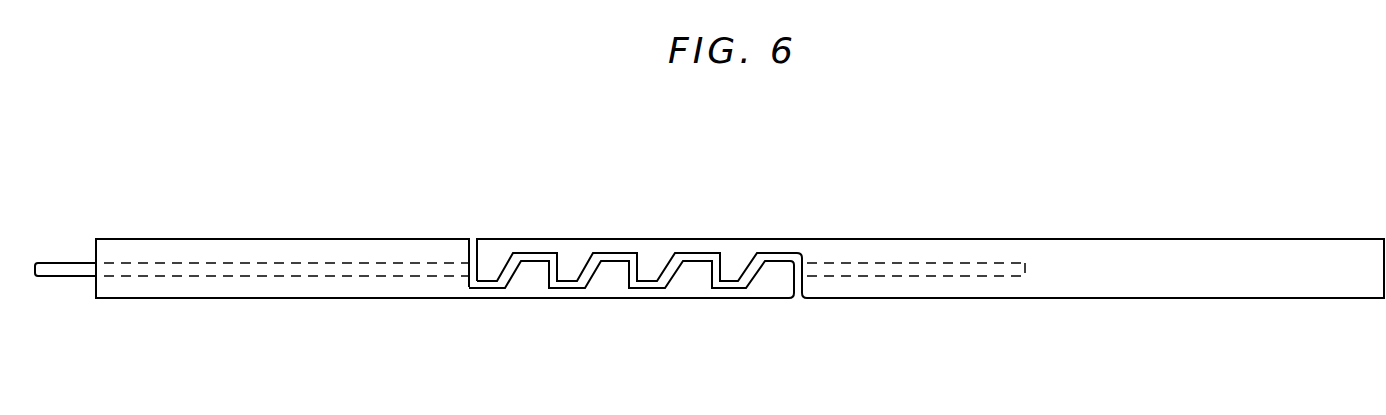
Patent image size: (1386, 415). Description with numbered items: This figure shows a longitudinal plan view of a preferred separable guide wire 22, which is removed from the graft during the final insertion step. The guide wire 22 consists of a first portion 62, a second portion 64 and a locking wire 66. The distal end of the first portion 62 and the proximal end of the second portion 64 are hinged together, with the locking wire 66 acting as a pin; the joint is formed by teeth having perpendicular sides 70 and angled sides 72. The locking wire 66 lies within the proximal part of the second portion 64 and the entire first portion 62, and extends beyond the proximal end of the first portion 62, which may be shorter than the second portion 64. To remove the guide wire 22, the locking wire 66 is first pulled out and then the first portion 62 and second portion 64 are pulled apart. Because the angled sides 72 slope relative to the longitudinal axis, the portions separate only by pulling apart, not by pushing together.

The guide wire 22 is at (334, 222).
The first portion 62 is at (411, 300).
The second portion 64 is at (1108, 238).
The locking wire 66 is at (52, 278).
The perpendicular sides 70 is at (550, 270).
The angled sides 72 is at (588, 272).